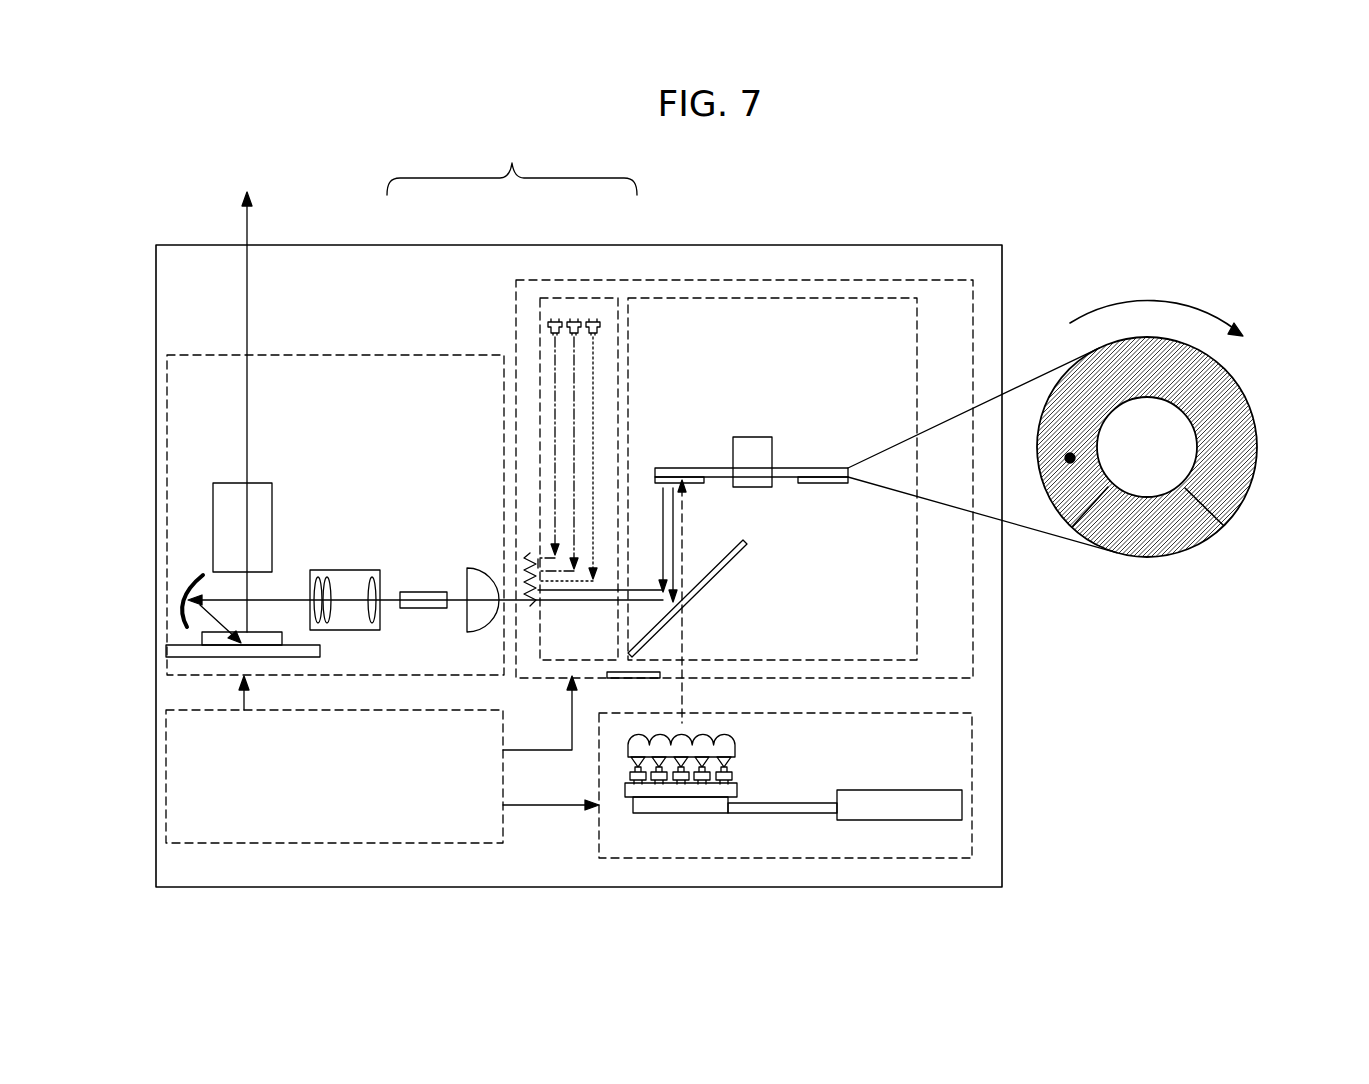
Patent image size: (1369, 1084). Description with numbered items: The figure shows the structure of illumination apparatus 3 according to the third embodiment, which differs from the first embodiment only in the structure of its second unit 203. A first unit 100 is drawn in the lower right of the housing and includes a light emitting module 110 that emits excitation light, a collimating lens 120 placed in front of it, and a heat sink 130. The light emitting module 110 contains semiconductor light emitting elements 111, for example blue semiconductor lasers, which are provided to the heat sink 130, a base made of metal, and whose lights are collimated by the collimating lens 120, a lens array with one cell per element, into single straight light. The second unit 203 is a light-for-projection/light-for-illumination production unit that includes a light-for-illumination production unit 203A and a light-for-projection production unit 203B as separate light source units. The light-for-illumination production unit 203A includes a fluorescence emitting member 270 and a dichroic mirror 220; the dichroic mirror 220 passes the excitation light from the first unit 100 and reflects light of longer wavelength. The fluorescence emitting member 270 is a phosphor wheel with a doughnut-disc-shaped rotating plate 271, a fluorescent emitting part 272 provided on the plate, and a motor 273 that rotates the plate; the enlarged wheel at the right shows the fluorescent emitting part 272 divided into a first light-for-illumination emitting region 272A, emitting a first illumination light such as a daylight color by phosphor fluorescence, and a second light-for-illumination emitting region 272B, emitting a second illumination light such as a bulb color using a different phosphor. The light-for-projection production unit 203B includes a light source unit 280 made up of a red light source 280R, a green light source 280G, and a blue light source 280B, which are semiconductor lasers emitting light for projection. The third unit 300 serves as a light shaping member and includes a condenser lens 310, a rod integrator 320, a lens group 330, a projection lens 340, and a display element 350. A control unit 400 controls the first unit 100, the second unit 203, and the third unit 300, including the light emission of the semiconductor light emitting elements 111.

The illumination apparatus 3 is at (962, 247).
The first unit 100 is at (836, 785).
The light emitting module 110 is at (733, 767).
The semiconductor light emitting elements 111 is at (733, 777).
The collimating lens 120 is at (725, 743).
The heat sink 130 is at (630, 797).
The second unit 203 is at (788, 280).
The light-for-illumination production unit 203A is at (868, 298).
The light-for-projection production unit 203B is at (607, 298).
The dichroic mirror 220 is at (695, 598).
The fluorescence emitting member 270 is at (994, 446).
The rotating plate 271 is at (794, 480).
The fluorescent emitting part 272 is at (702, 481).
The first light-for-illumination emitting region 272A is at (1248, 460).
The second light-for-illumination emitting region 272B is at (1178, 558).
The motor 273 is at (750, 437).
The light source unit 280 is at (512, 356).
The red light source 280R is at (547, 322).
The green light source 280G is at (568, 322).
The blue light source 280B is at (587, 322).
The third unit 300 is at (166, 445).
The condenser lens 310 is at (475, 568).
The rod integrator 320 is at (420, 592).
The lens group 330 is at (345, 570).
The projection lens 340 is at (267, 483).
The display element 350 is at (182, 633).
The control unit 400 is at (166, 785).